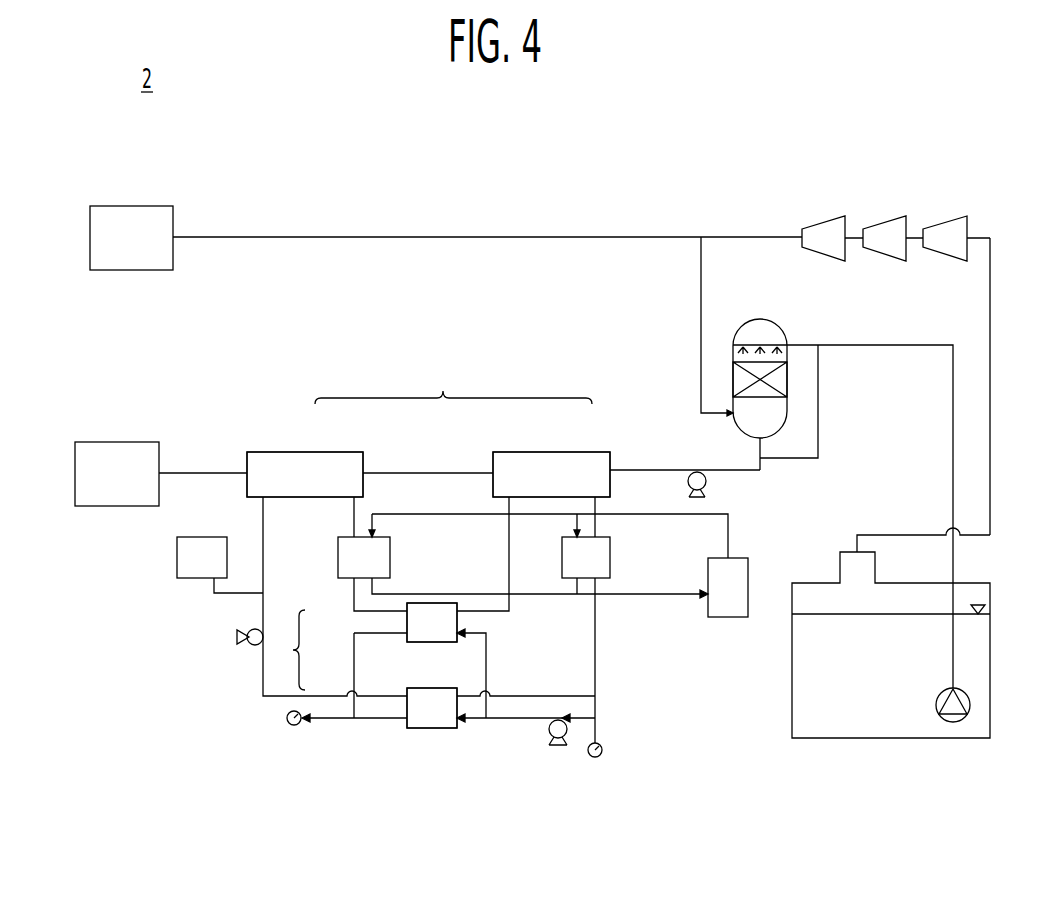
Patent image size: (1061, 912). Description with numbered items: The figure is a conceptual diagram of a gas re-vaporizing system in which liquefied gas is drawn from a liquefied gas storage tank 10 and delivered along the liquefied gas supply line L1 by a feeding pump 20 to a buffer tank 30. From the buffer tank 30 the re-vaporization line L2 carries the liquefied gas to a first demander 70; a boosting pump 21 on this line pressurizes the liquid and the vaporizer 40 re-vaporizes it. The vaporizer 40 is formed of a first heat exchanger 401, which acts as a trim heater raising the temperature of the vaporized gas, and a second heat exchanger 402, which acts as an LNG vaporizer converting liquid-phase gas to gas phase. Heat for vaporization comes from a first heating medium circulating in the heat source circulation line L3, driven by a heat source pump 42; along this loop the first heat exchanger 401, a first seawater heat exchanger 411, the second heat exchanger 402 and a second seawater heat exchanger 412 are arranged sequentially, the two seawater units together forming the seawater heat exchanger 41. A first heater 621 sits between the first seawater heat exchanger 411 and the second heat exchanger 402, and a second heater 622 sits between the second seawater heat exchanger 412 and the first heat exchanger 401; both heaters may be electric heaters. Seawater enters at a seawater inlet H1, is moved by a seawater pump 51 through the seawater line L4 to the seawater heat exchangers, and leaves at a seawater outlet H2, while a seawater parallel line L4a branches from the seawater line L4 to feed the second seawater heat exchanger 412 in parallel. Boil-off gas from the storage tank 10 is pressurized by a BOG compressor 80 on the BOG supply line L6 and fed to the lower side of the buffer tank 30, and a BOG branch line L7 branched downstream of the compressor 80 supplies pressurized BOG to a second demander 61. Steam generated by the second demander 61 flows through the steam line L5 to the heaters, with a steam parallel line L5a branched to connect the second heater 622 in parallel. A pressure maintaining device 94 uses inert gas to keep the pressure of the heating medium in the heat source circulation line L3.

The liquefied gas storage tank 10 is at (990, 660).
The feeding pump 20 is at (955, 738).
The boosting pump 21 is at (707, 481).
The buffer tank 30 is at (762, 318).
The vaporizer 40 is at (428, 428).
The first heat exchanger 401 is at (310, 452).
The second heat exchanger 402 is at (553, 452).
The seawater heat exchanger 41 is at (366, 665).
The first seawater heat exchanger 411 is at (407, 690).
The second seawater heat exchanger 412 is at (407, 621).
The heat source pump 42 is at (237, 637).
The seawater pump 51 is at (550, 736).
The second demander 61 is at (130, 206).
The first heater 621 is at (610, 560).
The second heater 622 is at (338, 555).
The first demander 70 is at (118, 442).
The BOG compressor 80 is at (953, 249).
The pressure maintaining device 94 is at (177, 555).
The liquefied gas supply line L1 is at (953, 550).
The re-vaporization line L2 is at (647, 470).
The heat source circulation line L3 is at (263, 683).
The seawater line L4 is at (372, 718).
The seawater parallel line L4a is at (486, 660).
The steam line L5 is at (657, 594).
The steam parallel line L5a is at (438, 514).
The BOG supply line L6 is at (701, 322).
The BOG branch line L7 is at (383, 237).
The seawater inlet H1 is at (595, 757).
The seawater outlet H2 is at (294, 725).